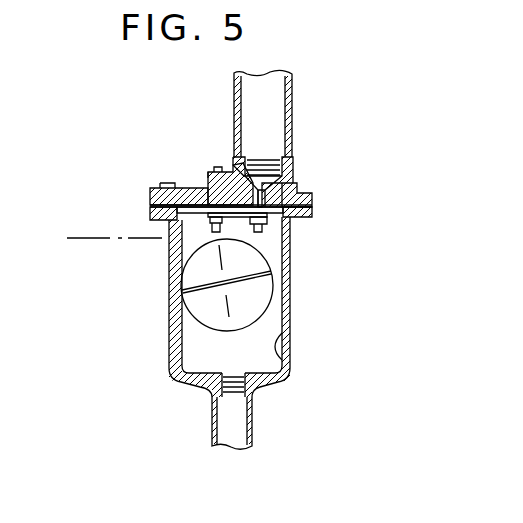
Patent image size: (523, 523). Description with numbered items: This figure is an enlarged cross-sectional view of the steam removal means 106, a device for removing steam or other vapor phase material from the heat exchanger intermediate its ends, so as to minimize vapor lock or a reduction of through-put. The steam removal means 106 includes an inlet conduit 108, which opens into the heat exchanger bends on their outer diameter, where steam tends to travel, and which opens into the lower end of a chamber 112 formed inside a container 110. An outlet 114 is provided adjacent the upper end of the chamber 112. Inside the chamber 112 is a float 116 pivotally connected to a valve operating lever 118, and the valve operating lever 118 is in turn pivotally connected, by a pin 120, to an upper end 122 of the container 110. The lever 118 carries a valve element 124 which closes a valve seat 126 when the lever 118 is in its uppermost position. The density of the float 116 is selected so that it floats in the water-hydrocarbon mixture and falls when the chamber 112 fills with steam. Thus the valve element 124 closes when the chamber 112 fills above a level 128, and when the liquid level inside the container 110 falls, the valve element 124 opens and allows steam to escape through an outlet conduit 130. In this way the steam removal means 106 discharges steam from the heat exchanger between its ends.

The steam removal means 106 is at (338, 318).
The inlet conduit 108 is at (212, 430).
The container 110 is at (287, 349).
The chamber 112 is at (291, 374).
The outlet 114 is at (250, 187).
The float 116 is at (200, 320).
The valve operating lever 118 is at (268, 230).
The pin 120 is at (262, 227).
The upper end 122 is at (288, 160).
The valve element 124 is at (250, 223).
The valve seat 126 is at (257, 215).
The level 128 is at (132, 237).
The outlet conduit 130 is at (293, 107).